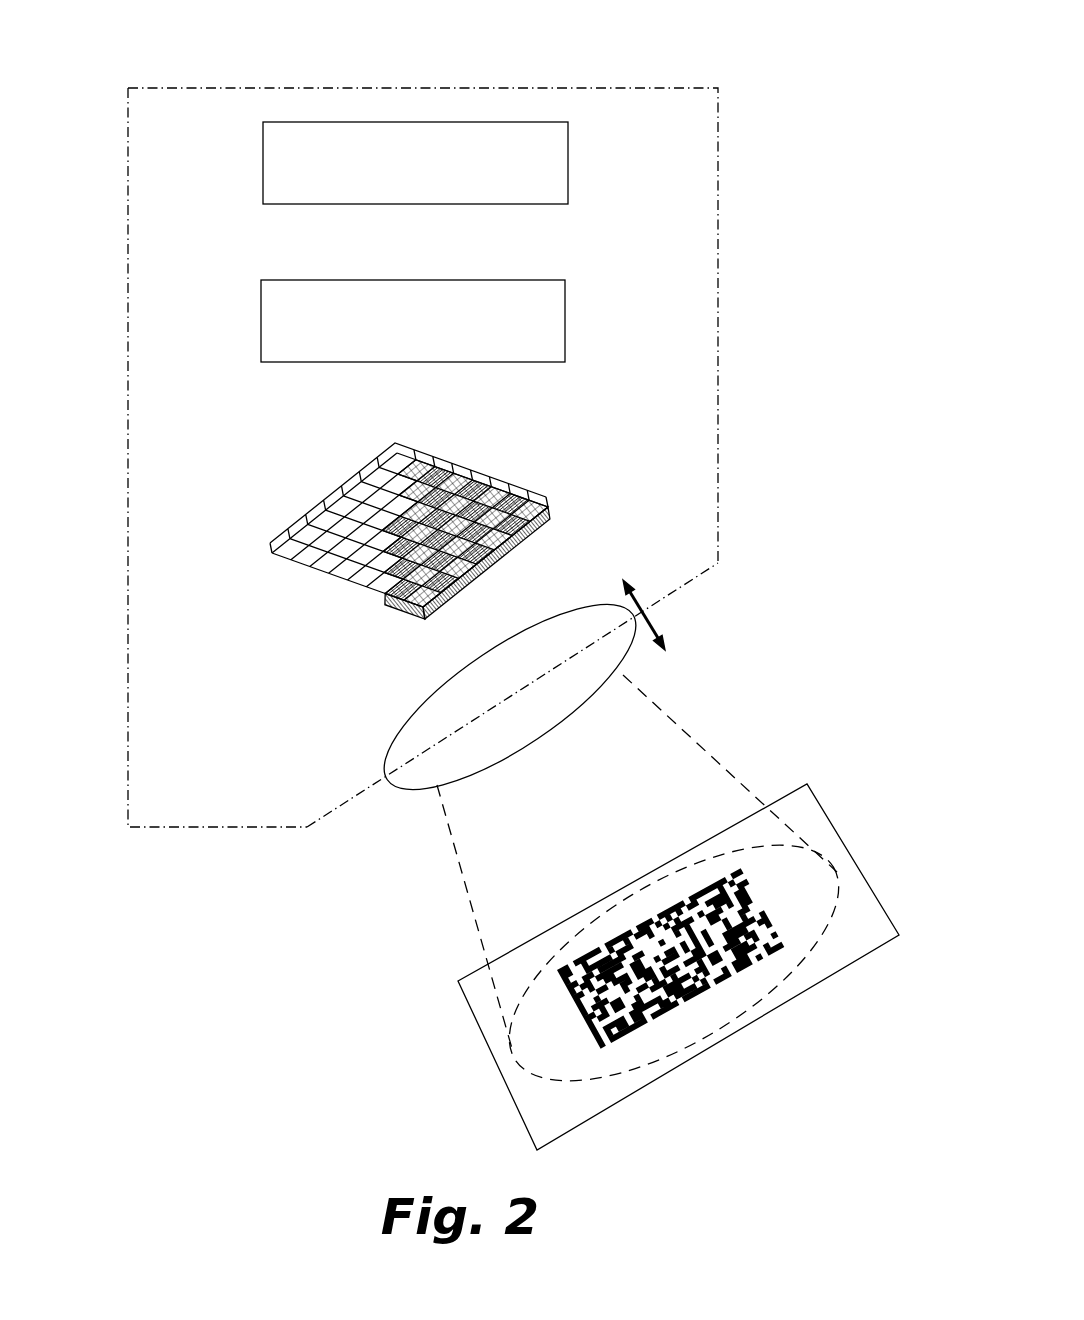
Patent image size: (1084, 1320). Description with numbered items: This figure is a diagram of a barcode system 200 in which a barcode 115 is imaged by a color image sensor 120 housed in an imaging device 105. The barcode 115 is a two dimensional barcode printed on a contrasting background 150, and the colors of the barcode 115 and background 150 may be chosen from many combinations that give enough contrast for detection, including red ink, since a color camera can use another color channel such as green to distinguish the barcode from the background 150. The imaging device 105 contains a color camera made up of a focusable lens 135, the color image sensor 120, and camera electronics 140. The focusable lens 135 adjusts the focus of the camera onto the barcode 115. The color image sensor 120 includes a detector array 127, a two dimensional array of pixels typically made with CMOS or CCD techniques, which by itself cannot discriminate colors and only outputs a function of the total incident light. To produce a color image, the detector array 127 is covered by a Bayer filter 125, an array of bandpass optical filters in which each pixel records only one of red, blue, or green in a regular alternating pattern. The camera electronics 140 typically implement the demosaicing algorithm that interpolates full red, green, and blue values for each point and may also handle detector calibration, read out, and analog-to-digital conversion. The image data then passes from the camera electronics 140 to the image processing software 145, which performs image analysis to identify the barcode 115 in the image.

The barcode system 200 is at (748, 70).
The imaging device 105 is at (718, 418).
The image processing software 145 is at (415, 163).
The camera electronics 140 is at (413, 321).
The color image sensor 120 is at (255, 637).
The detector array 127 is at (540, 496).
The Bayer filter 125 is at (547, 508).
The focusable lens 135 is at (420, 777).
The background 150 is at (487, 997).
The barcode 115 is at (690, 1003).